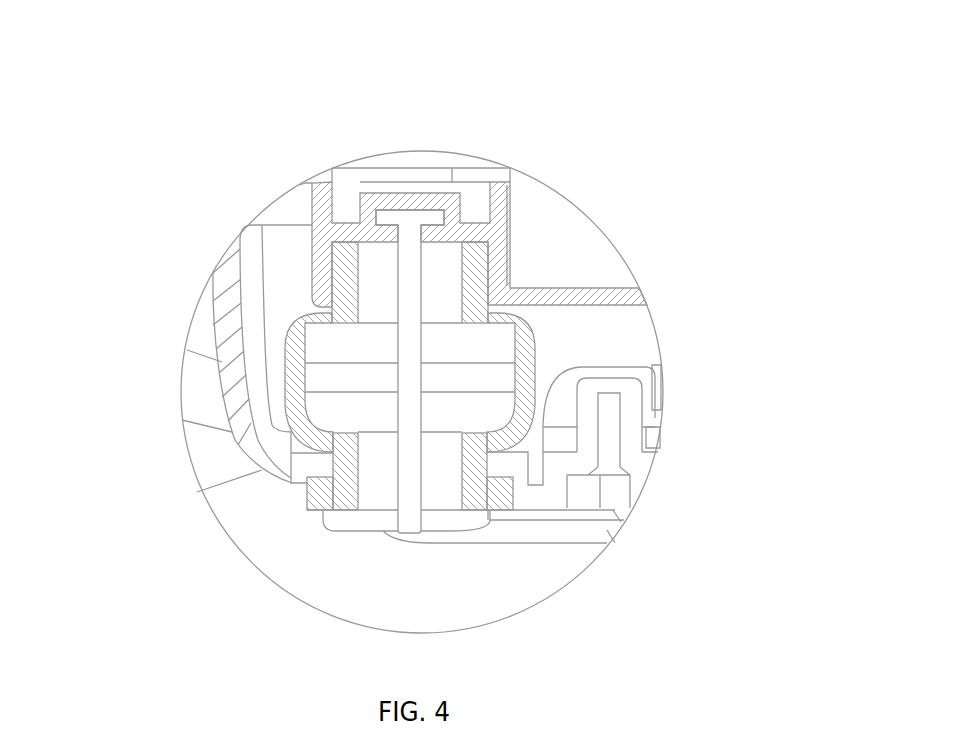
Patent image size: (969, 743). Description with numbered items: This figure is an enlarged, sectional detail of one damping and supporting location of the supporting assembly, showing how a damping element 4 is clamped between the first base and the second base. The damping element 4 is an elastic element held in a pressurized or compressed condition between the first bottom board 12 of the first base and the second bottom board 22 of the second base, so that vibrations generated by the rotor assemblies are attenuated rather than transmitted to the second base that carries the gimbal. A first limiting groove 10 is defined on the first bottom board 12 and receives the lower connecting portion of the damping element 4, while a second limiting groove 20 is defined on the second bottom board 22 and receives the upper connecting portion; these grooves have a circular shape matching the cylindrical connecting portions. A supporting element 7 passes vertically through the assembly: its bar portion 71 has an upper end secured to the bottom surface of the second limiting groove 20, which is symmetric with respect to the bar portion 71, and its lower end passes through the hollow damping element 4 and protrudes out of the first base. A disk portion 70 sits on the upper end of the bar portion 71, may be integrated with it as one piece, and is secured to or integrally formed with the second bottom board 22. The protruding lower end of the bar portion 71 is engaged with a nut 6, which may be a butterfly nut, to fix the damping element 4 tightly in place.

The supporting element 7 is at (93, 20).
The disk portion 70 is at (407, 221).
The bar portion 71 is at (410, 373).
The second bottom board 22 is at (491, 206).
The second limiting groove 20 is at (486, 274).
The damping element 4 is at (525, 367).
The first limiting groove 10 is at (309, 487).
The nut 6 is at (371, 521).
The first bottom board 12 is at (529, 497).